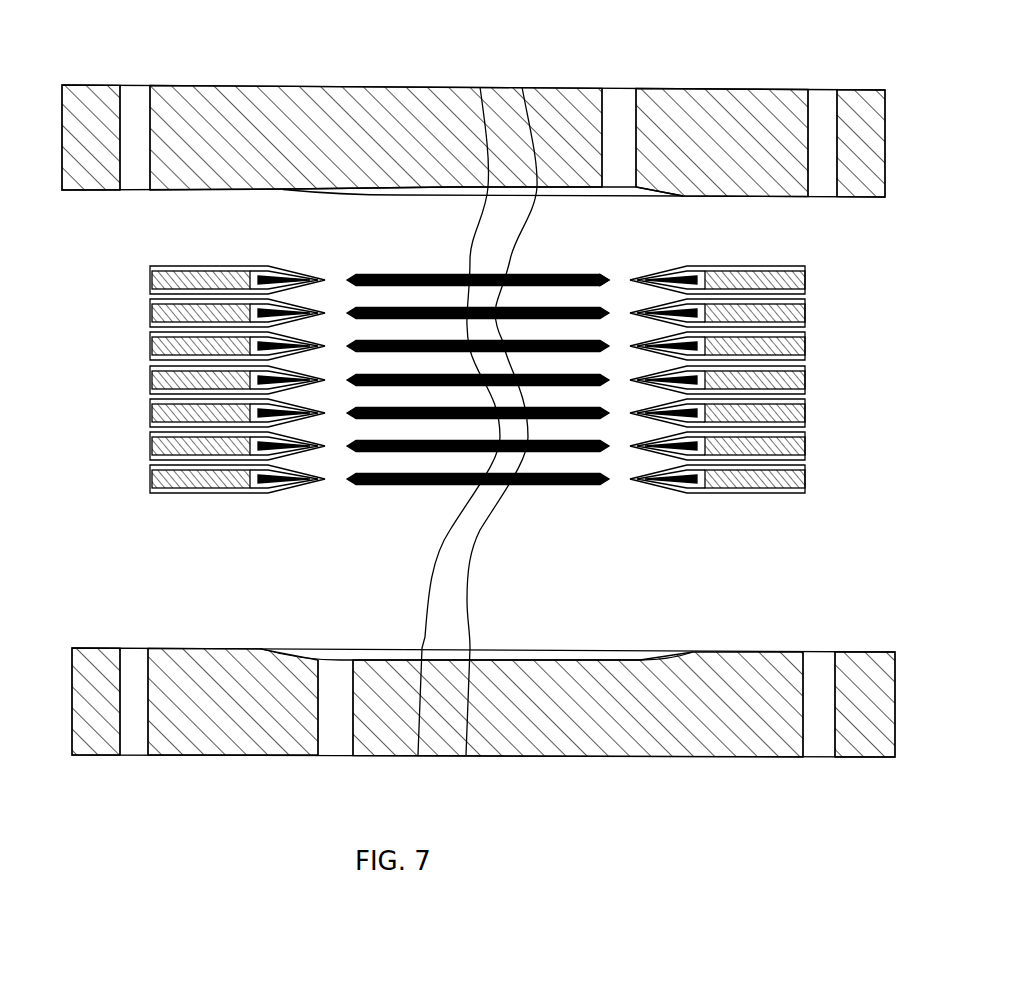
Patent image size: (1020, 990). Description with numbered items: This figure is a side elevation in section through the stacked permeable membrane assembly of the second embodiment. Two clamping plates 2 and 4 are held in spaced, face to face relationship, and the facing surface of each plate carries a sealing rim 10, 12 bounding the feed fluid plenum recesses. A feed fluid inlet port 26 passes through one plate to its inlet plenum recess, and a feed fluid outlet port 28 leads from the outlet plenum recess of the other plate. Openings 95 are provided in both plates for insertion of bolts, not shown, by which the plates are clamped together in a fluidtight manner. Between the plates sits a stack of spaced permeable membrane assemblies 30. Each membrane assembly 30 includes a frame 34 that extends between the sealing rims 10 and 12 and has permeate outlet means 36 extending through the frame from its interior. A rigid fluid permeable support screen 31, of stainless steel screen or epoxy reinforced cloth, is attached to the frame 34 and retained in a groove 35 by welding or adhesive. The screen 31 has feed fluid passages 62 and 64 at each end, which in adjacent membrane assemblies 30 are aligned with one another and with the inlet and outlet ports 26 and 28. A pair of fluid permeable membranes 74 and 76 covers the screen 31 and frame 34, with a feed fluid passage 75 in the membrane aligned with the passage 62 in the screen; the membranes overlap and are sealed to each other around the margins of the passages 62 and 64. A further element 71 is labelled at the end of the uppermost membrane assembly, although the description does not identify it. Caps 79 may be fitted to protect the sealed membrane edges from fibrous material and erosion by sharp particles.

The clamping plate 2 is at (742, 100).
The clamping plate 4 is at (748, 745).
The sealing rim 10 is at (172, 194).
The sealing rim 12 is at (182, 647).
The feed fluid inlet port 26 is at (620, 100).
The feed fluid outlet port 28 is at (330, 745).
The membrane assembly 30 is at (486, 284).
The screen 31 is at (572, 270).
The frame 34 is at (471, 368).
The groove 35 is at (625, 277).
The permeate outlet means 36 is at (580, 242).
The feed fluid passage 62 is at (336, 274).
The feed fluid passage 64 is at (618, 278).
The contact outer body 71 is at (650, 274).
The fluid permeable membrane 74 is at (405, 274).
The feed fluid passage 75 is at (328, 270).
The fluid permeable membrane 76 is at (370, 275).
The cap 79 is at (312, 486).
The opening 95 is at (134, 108).